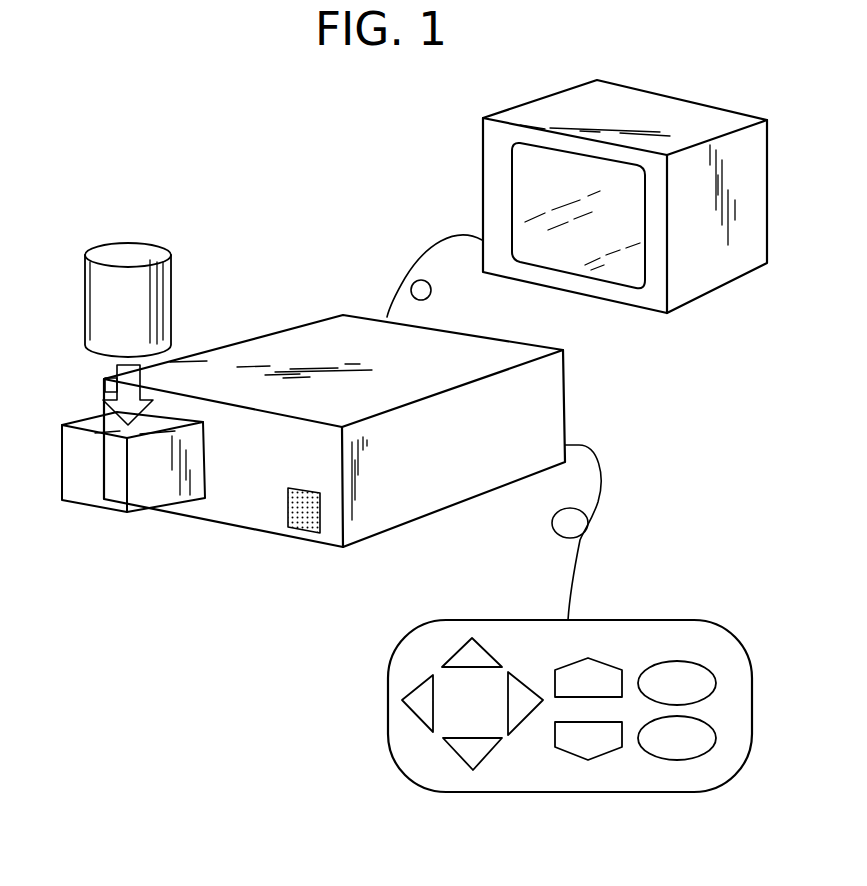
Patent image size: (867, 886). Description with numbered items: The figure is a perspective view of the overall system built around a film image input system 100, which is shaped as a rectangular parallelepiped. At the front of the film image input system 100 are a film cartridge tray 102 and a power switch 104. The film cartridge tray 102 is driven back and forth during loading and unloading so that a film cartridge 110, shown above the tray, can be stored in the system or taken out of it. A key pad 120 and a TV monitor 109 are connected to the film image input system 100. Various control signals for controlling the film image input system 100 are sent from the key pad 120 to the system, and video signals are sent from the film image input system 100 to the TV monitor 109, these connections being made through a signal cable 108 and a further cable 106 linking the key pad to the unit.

The film image input system 100 is at (320, 347).
The film cartridge tray 102 is at (100, 485).
The power switch 104 is at (288, 510).
The controller cable 106 is at (590, 552).
The signal cable 108 is at (438, 255).
The TV monitor 109 is at (517, 112).
The film cartridge 110 is at (115, 252).
The key pad 120 is at (686, 620).